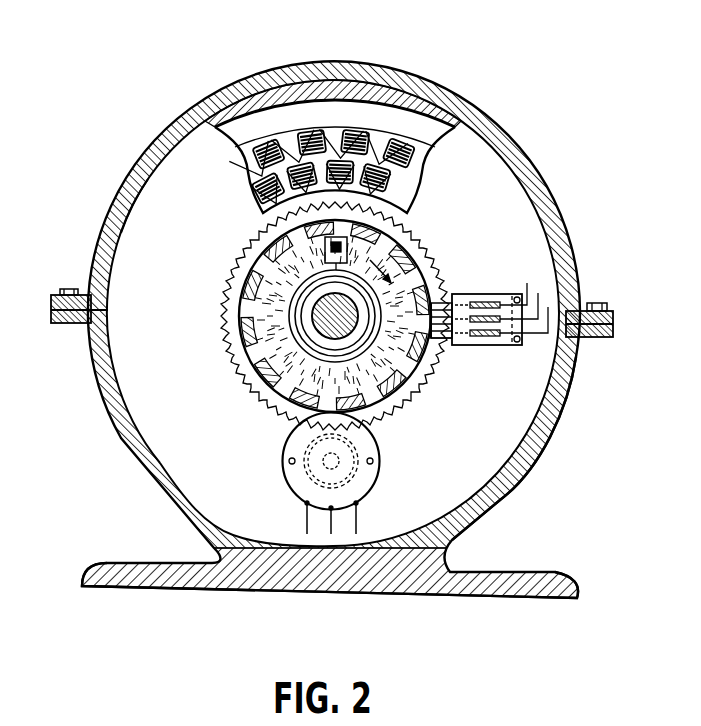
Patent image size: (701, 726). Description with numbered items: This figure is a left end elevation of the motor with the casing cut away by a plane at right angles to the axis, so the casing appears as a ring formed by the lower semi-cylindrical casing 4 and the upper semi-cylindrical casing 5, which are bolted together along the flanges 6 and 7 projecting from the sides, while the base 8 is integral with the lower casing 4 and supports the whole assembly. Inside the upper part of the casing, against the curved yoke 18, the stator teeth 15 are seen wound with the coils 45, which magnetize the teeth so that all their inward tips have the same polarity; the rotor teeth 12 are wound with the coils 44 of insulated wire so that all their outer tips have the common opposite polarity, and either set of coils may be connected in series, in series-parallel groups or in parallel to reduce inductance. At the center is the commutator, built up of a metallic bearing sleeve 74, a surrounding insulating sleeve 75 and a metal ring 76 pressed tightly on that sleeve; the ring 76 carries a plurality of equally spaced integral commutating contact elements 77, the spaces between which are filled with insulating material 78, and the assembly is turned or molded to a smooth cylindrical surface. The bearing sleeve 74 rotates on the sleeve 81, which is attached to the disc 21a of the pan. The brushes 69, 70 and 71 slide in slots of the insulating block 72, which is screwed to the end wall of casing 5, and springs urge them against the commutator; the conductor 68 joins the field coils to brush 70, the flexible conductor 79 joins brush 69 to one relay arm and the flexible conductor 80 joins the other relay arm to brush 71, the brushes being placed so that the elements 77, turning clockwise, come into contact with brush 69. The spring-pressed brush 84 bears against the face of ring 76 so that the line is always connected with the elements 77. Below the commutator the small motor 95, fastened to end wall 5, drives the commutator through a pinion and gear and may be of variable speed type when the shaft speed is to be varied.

The lower semi-cylindrical casing 4 is at (551, 449).
The upper semi-cylindrical casing 5 is at (505, 131).
The flange 6 is at (53, 312).
The flange 7 is at (53, 298).
The base 8 is at (546, 598).
The rotor teeth 12 is at (257, 194).
The stator teeth 15 is at (308, 132).
The stator yoke 18 is at (428, 100).
The disc 21a is at (145, 207).
The coils 44 is at (255, 182).
The coils 45 is at (273, 140).
The conductor 68 is at (538, 293).
The brush 69 is at (434, 303).
The brush 70 is at (430, 317).
The brush 71 is at (444, 340).
The insulating block 72 is at (498, 346).
The bearing sleeve 74 is at (303, 325).
The insulating sleeve 75 is at (312, 344).
The metal ring 76 is at (238, 343).
The commutating contact elements 77 is at (232, 264).
The insulating material 78 is at (267, 242).
The flexible conductor 79 is at (527, 283).
The flexible conductor 80 is at (548, 307).
The sleeve 81 is at (351, 347).
The brush 84 is at (347, 247).
The small motor 95 is at (380, 487).